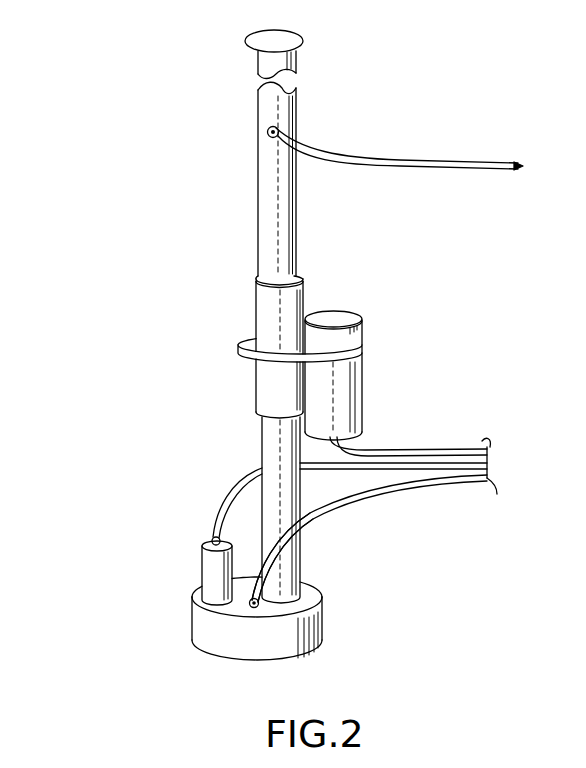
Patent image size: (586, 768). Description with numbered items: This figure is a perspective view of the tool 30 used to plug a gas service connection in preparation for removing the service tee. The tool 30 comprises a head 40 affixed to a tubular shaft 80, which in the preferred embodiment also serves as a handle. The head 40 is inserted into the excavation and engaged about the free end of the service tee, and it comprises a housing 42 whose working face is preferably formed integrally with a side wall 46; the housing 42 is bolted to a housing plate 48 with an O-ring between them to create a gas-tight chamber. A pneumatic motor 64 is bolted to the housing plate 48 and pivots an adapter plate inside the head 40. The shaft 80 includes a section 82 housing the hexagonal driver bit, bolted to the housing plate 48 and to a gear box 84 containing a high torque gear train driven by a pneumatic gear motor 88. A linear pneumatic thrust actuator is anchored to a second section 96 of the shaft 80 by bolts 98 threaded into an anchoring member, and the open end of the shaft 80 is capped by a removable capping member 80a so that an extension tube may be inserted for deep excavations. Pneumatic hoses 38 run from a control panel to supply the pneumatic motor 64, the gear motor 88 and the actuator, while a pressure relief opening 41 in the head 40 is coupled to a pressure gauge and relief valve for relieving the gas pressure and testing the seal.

The tool 30 is at (238, 208).
The capping member 80a is at (291, 40).
The bolts 98 is at (296, 126).
The pneumatic hoses 38 is at (440, 162).
The second section of the shaft 96 is at (296, 180).
The tubular shaft 80 is at (306, 259).
The gear box 84 is at (278, 357).
The pneumatic gear motor 88 is at (360, 392).
The section of the shaft 82 is at (267, 455).
The housing plate 48 is at (249, 578).
The pneumatic motor 64 is at (207, 568).
The head 40 is at (322, 589).
The pressure relief opening 41 is at (240, 607).
The side wall 46 is at (261, 652).
The housing 42 is at (280, 636).